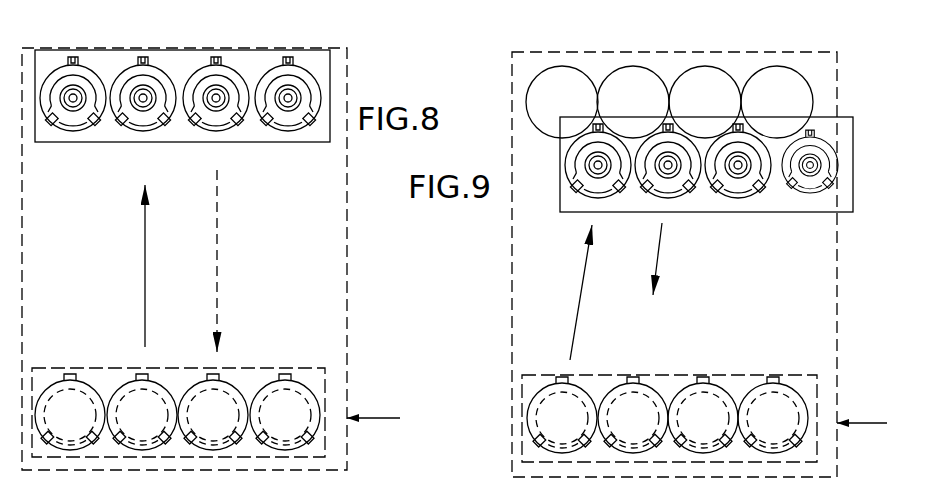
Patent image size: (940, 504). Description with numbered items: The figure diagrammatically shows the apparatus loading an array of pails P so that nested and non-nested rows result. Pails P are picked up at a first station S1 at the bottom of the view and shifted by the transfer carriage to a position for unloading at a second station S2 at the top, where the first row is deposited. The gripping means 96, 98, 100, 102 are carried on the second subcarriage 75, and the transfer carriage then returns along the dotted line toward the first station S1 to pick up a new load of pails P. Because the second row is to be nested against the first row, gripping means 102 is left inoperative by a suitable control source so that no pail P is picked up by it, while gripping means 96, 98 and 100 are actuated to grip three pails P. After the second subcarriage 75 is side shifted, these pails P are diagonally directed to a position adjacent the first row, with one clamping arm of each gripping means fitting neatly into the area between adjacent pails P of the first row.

In FIG. 8, the second subcarriage 75 is at (263, 143).
In FIG. 9, the second subcarriage 75 is at (773, 118).
In FIG. 8, the gripping means 96 is at (87, 68).
In FIG. 9, the gripping means 96 is at (587, 193).
In FIG. 8, the gripping means 98 is at (158, 68).
In FIG. 9, the gripping means 98 is at (657, 193).
In FIG. 8, the gripping means 100 is at (230, 68).
In FIG. 9, the gripping means 100 is at (733, 193).
In FIG. 8, the gripping means 102 is at (300, 68).
In FIG. 9, the gripping means 102 is at (813, 194).
In FIG. 8, the pail P is at (64, 142).
In FIG. 9, the pail P is at (680, 72).
In FIG. 8, the first station S1 is at (305, 365).
In FIG. 9, the first station S1 is at (548, 367).
In FIG. 8, the second station S2 is at (333, 87).